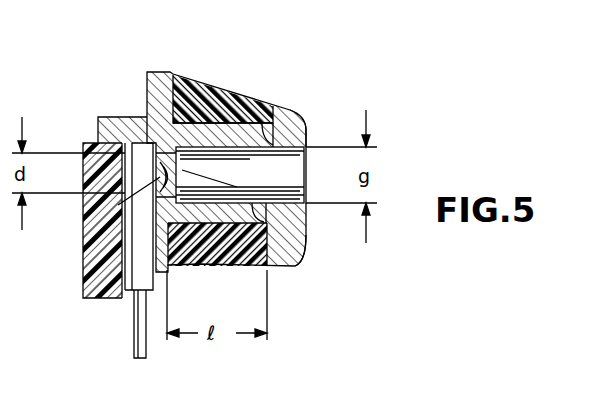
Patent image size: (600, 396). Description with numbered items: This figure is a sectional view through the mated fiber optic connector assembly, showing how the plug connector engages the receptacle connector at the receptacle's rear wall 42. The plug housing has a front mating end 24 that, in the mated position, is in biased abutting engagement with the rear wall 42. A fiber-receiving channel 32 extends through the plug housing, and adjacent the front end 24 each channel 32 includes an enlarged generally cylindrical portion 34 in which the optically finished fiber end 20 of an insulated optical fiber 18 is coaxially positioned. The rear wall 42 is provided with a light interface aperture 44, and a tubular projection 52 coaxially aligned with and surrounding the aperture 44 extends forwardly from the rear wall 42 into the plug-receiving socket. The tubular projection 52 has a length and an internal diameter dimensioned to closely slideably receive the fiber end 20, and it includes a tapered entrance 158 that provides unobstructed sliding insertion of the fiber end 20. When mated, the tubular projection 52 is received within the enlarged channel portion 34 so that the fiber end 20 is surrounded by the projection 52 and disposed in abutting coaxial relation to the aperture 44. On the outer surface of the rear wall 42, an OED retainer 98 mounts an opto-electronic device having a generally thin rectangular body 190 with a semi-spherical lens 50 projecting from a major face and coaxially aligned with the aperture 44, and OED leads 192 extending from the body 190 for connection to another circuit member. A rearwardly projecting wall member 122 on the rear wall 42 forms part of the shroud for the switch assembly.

The rear wall 42 is at (163, 72).
The front mating end 24 is at (190, 82).
The enlarged generally cylindrical portion 34 is at (233, 98).
The tubular projection 52 is at (262, 108).
The tapered entrance 158 is at (292, 112).
The fiber-receiving channel 32 is at (305, 132).
The insulated optical fiber 18 is at (290, 174).
The fiber end 20 is at (302, 258).
The light interface aperture 44 is at (157, 153).
The wall member 122 is at (91, 123).
The OED retainer 98 is at (85, 250).
The lens 50 is at (90, 222).
The rectangular body 190 is at (97, 298).
The OED lead 192 is at (132, 338).